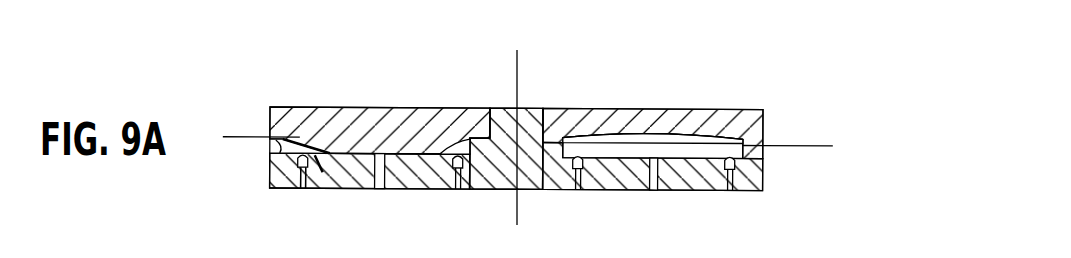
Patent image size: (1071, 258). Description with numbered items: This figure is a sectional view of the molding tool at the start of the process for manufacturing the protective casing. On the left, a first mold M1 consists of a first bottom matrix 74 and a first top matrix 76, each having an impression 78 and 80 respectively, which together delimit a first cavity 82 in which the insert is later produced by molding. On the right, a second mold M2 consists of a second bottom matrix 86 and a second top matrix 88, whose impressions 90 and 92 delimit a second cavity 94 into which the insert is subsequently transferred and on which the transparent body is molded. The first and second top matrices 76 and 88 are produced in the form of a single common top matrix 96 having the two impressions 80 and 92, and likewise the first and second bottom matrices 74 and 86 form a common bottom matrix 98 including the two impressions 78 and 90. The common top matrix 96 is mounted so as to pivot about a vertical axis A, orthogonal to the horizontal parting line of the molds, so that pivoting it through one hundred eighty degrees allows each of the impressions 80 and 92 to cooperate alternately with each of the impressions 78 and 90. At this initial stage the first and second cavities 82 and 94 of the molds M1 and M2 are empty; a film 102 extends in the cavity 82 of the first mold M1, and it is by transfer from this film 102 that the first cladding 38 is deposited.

The first cladding 38 is at (300, 148).
The first bottom matrix 74 is at (280, 172).
The first top matrix 76 is at (390, 107).
The impression 78 is at (308, 139).
The impression 80 is at (403, 188).
The first cavity 82 is at (322, 188).
The second bottom matrix 86 is at (745, 170).
The second top matrix 88 is at (750, 120).
The impression 90 is at (628, 190).
The impression 92 is at (680, 135).
The second cavity 94 is at (628, 128).
The common top matrix 96 is at (473, 106).
The common bottom matrix 98 is at (505, 190).
The film 102 is at (242, 135).
The first mold M1 is at (357, 63).
The second mold M2 is at (645, 77).
The vertical axis A is at (518, 67).